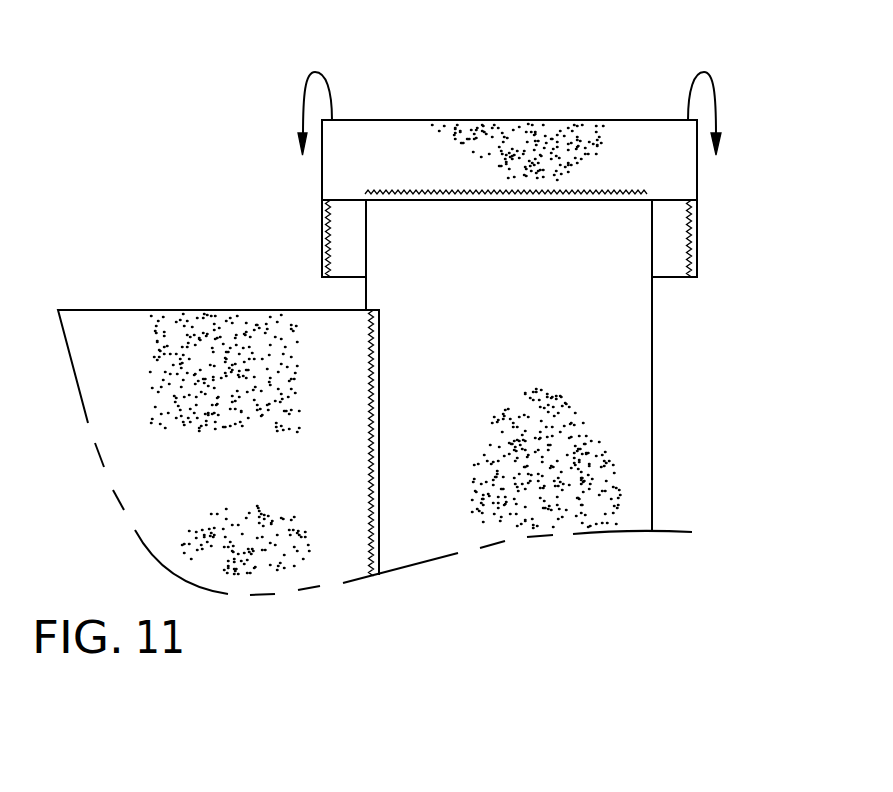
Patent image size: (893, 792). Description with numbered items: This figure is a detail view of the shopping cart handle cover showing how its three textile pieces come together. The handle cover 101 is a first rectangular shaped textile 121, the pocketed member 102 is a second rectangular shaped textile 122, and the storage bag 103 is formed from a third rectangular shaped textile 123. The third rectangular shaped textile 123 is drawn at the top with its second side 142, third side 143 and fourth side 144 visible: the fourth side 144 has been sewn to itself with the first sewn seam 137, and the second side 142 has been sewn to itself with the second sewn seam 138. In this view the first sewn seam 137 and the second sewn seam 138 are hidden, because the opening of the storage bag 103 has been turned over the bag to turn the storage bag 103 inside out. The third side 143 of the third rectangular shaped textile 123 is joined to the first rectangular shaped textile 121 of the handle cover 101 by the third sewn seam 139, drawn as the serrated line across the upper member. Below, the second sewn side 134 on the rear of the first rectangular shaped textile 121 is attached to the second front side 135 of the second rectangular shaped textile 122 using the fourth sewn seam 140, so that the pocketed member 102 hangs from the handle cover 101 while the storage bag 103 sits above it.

The handle cover 101 is at (620, 423).
The pocketed member 102 is at (183, 343).
The storage bag 103 is at (638, 137).
The first rectangular shaped textile 121 is at (630, 467).
The second rectangular shaped textile 122 is at (113, 372).
The third rectangular shaped textile 123 is at (538, 147).
The second sewn side 134 is at (365, 297).
The second front side 135 is at (367, 295).
The first sewn seam 137 is at (328, 240).
The second sewn seam 138 is at (693, 222).
The third sewn seam 139 is at (498, 192).
The fourth sewn seam 140 is at (437, 435).
The second side 142 is at (697, 262).
The third side 143 is at (552, 200).
The fourth side 144 is at (322, 213).